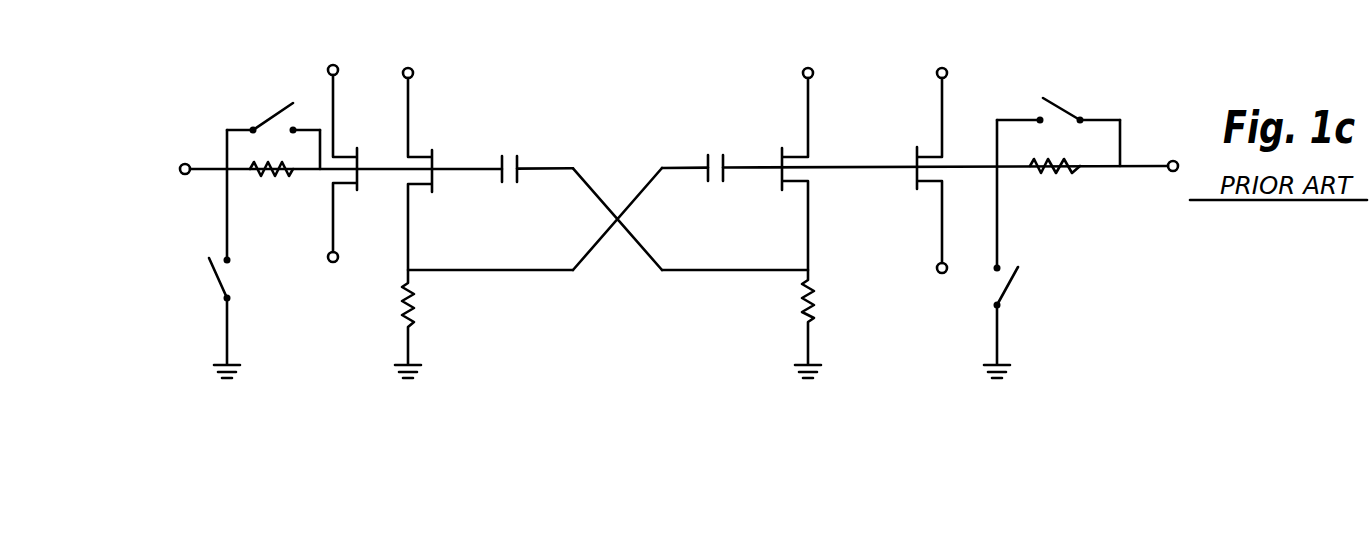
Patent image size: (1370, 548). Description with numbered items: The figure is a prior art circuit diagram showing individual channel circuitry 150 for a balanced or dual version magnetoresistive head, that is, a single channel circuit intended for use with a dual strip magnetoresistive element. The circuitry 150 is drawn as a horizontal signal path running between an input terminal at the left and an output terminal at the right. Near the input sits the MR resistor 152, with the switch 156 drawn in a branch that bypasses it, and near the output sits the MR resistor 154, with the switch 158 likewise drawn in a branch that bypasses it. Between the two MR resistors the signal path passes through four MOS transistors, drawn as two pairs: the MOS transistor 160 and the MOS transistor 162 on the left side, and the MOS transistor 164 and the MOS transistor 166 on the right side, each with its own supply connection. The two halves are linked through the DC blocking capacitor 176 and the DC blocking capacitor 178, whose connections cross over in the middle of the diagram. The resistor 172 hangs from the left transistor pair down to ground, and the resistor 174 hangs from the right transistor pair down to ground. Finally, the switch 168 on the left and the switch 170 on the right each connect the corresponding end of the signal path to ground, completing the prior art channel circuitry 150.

The individual channel circuitry 150 is at (609, 114).
The MR resistor 152 is at (262, 178).
The MR resistor 154 is at (1067, 175).
The switch 156 is at (273, 112).
The switch 158 is at (1060, 103).
The MOS transistor 160 is at (342, 153).
The MOS transistor 162 is at (420, 150).
The MOS transistor 164 is at (780, 150).
The MOS transistor 166 is at (913, 150).
The switch 168 is at (225, 278).
The switch 170 is at (1015, 283).
The resistor 172 is at (416, 303).
The resistor 174 is at (813, 288).
The DC blocking capacitor 176 is at (523, 163).
The DC blocking capacitor 178 is at (707, 165).